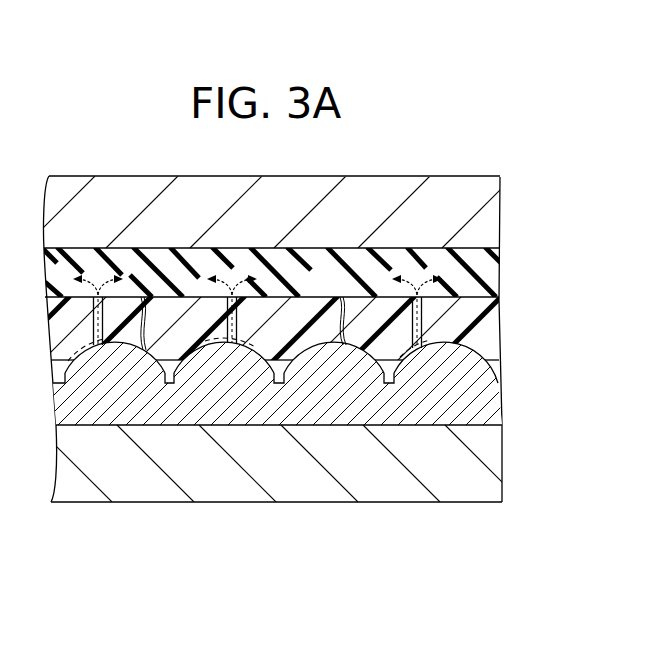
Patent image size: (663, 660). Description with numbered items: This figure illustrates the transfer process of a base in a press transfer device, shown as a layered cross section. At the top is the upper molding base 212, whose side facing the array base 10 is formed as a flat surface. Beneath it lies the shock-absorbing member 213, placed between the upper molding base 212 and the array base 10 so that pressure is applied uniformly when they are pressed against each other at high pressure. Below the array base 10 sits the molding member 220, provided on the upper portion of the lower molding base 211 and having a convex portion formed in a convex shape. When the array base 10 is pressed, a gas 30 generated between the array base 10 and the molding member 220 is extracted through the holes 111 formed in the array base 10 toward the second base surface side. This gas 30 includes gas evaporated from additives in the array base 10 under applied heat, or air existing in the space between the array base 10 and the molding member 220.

The upper molding base 212 is at (488, 213).
The shock-absorbing member 213 is at (488, 272).
The array base 10 is at (487, 310).
The holes 111 is at (422, 318).
The molding member 220 is at (495, 408).
The gas 30 is at (382, 364).
The lower molding base 211 is at (495, 464).